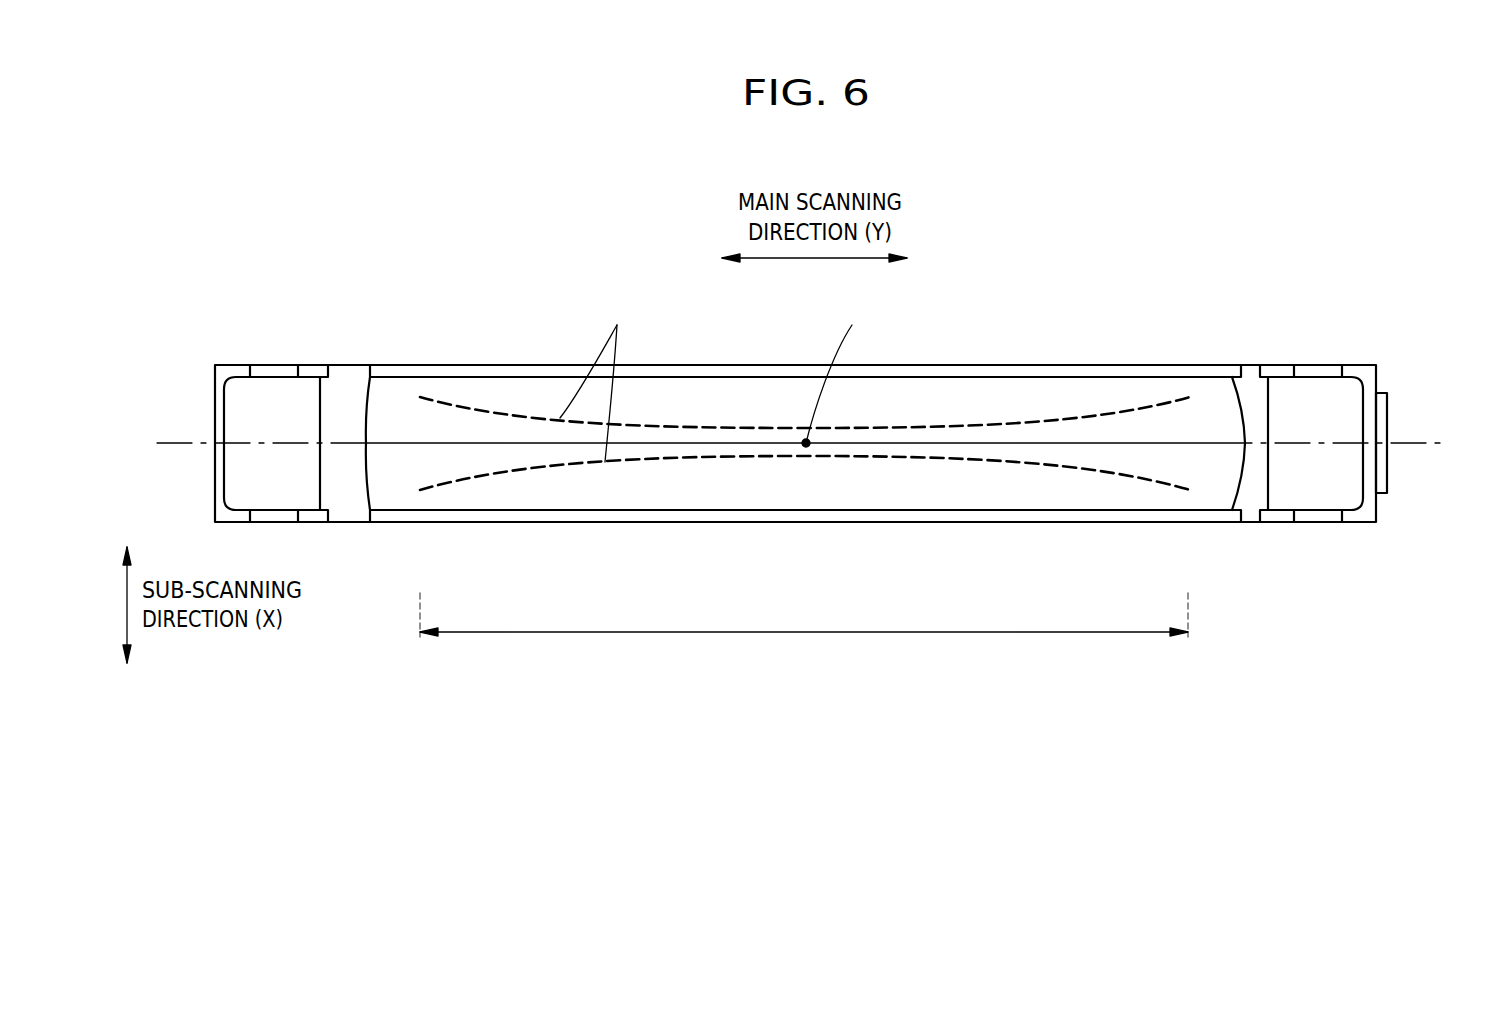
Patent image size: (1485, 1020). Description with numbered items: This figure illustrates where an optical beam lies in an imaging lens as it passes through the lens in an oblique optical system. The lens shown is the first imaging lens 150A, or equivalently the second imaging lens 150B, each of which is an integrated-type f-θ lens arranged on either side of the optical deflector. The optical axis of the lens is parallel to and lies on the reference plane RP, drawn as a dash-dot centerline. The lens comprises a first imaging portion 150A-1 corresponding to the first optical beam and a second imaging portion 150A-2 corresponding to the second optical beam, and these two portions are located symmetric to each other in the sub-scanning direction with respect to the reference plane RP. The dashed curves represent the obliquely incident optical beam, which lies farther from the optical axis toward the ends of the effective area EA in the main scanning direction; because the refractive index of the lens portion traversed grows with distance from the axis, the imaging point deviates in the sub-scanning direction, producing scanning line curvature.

The first imaging lens 150A is at (828, 407).
The second imaging lens 150B is at (828, 407).
The first imaging portion 150A-1 is at (1158, 388).
The second imaging portion 150A-2 is at (1163, 490).
The reference plane RP is at (185, 441).
The effective area EA is at (804, 615).